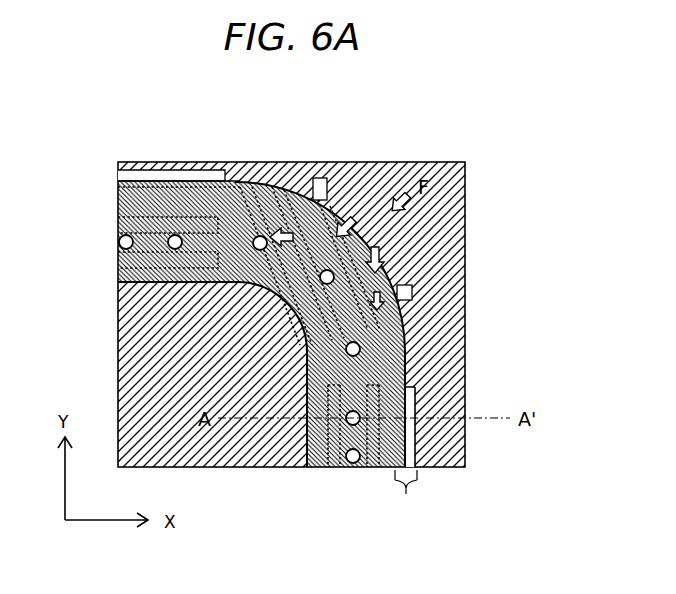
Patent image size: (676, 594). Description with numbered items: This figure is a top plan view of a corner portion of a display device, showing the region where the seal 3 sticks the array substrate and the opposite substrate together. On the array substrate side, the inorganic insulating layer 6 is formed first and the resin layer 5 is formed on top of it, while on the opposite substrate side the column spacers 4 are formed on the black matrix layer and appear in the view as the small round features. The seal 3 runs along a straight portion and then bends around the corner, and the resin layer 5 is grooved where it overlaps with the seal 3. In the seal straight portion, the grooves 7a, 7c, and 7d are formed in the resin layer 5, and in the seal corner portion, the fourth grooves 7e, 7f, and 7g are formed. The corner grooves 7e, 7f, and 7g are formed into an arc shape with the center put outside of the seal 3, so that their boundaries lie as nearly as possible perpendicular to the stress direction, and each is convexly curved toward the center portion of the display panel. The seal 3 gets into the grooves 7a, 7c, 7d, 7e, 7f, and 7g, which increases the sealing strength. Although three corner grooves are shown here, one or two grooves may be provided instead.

The seal 3 is at (118, 207).
The column spacer 4 is at (360, 350).
The resin layer 5 is at (460, 456).
The inorganic insulating layer 6 is at (407, 387).
The groove 7a is at (405, 493).
The groove 7c is at (375, 469).
The groove 7d is at (335, 469).
The fourth groove 7e is at (325, 185).
The fourth groove 7f is at (277, 187).
The fourth groove 7g is at (240, 185).